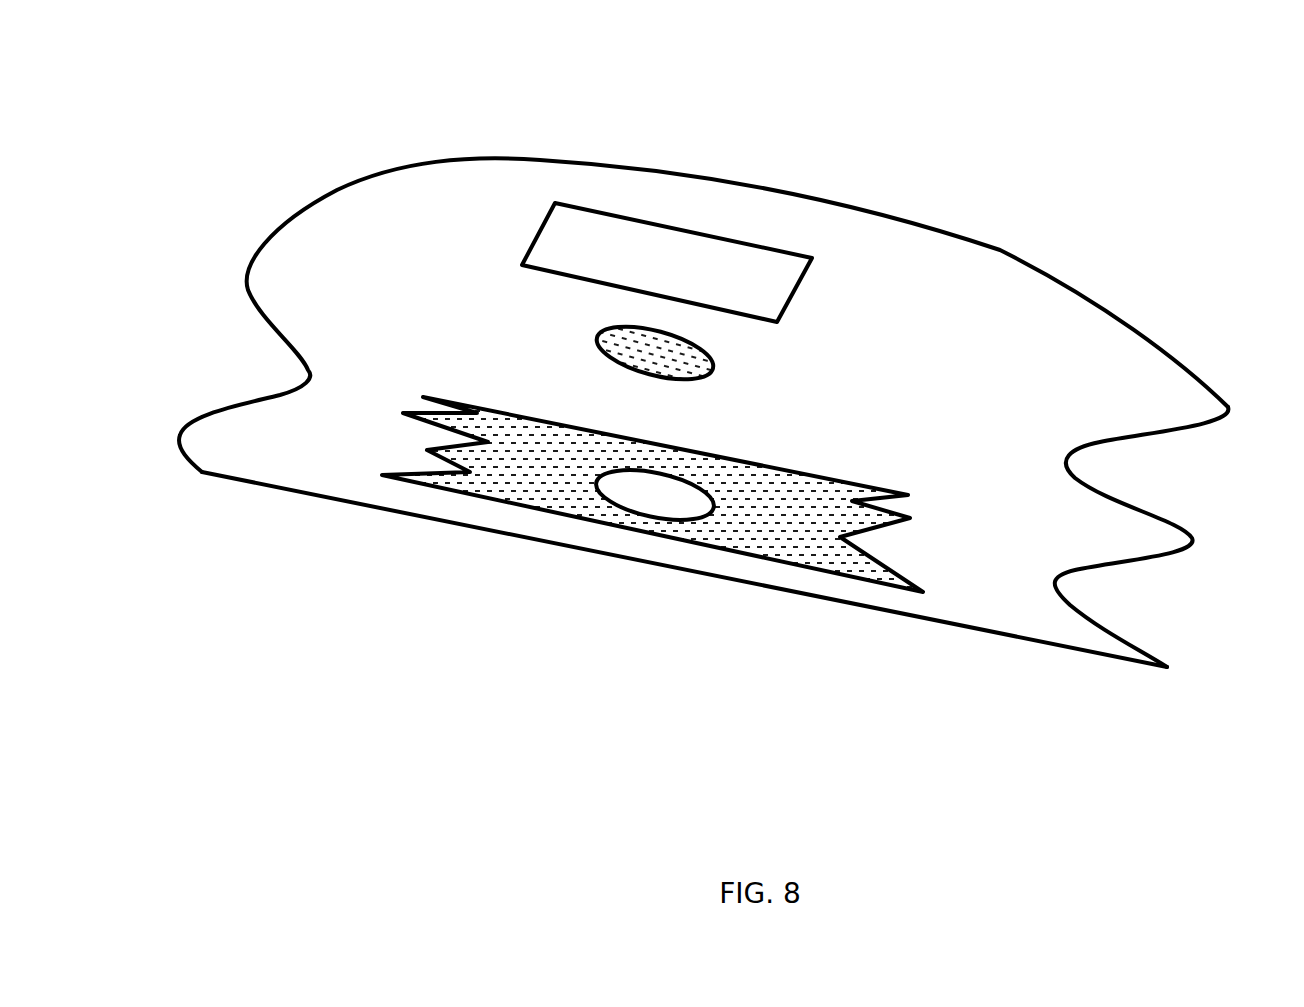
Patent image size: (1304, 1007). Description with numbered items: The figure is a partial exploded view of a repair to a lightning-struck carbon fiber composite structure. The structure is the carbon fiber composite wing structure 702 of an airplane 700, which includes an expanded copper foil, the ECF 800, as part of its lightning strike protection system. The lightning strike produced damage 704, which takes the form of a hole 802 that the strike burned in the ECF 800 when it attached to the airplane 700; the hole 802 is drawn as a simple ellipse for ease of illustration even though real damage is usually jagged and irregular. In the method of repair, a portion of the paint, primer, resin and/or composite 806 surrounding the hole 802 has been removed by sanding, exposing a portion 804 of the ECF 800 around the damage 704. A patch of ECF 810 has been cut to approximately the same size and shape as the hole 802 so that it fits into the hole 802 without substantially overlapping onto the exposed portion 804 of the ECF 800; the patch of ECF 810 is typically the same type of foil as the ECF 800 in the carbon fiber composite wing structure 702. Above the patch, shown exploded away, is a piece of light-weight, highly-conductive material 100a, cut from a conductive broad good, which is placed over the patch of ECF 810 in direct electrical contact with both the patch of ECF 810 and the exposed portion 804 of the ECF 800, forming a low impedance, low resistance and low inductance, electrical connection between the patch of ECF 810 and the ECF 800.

The airplane 700 is at (720, 377).
The carbon fiber composite wing structure 702 is at (1108, 222).
The damage 704 is at (742, 605).
The paint, primer, resin and/or composite 806 is at (1135, 357).
The ECF 800 is at (644, 460).
The hole 802 is at (655, 490).
The exposed portion of the ECF 804 is at (643, 458).
The patch of ECF 810 is at (593, 342).
The piece of light-weight, highly-conductive material 100a is at (543, 217).